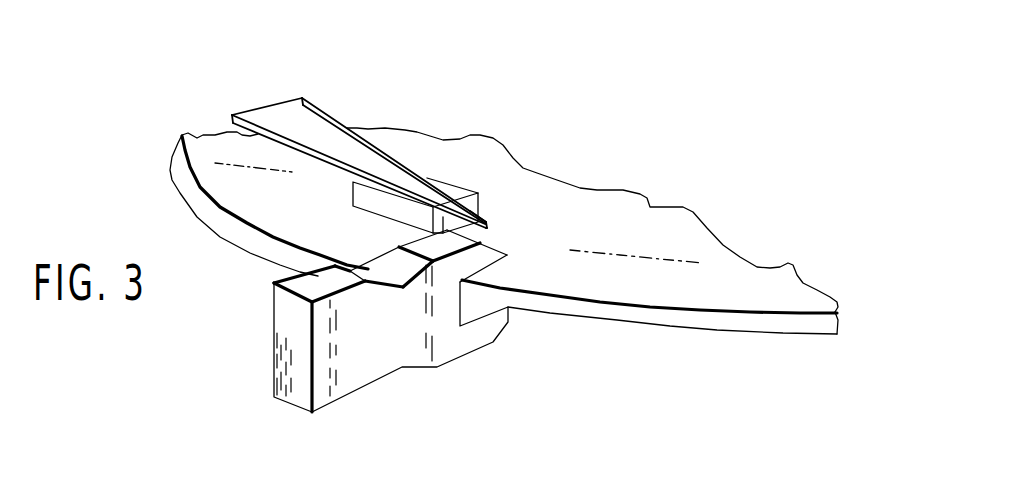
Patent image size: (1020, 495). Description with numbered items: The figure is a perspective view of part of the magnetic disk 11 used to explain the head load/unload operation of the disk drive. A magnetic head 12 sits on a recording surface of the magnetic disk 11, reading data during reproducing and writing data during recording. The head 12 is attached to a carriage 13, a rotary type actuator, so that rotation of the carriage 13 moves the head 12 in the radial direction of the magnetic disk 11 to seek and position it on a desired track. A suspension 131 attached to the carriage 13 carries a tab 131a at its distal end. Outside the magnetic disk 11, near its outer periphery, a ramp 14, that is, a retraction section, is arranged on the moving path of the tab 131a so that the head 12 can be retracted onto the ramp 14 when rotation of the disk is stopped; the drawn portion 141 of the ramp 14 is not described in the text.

The magnetic disk 11 is at (504, 263).
The magnetic head 12 is at (369, 205).
The carriage 13 is at (257, 93).
The suspension 131 is at (359, 141).
The tab 131a is at (525, 178).
The ramp (retraction section) 14 is at (392, 313).
The clamp block top face 141 is at (493, 248).